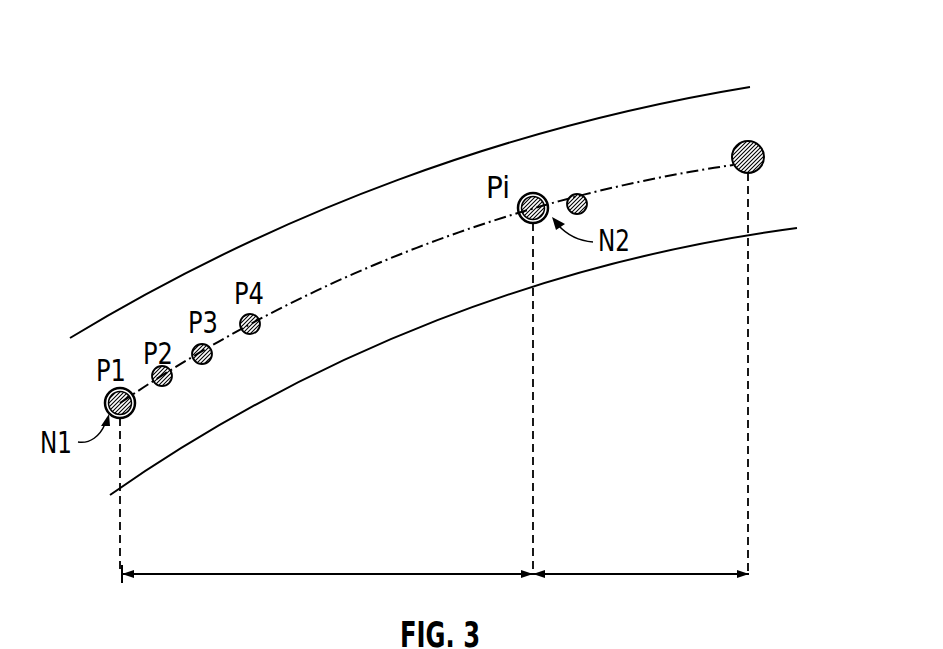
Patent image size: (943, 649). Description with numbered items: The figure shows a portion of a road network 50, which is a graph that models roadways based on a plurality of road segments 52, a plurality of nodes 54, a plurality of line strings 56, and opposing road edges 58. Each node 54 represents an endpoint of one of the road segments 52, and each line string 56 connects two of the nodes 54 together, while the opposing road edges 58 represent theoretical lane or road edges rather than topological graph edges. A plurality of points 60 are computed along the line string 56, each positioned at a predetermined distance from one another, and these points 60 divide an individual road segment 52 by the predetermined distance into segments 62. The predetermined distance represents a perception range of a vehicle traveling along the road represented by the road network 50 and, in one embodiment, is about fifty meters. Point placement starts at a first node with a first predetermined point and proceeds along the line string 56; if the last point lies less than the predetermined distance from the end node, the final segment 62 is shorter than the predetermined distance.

The road network 50 is at (724, 33).
The road segment 52 is at (328, 574).
The node 54 is at (109, 395).
The line string 56 is at (405, 258).
The opposing road edge 58 is at (367, 192).
The point 60 is at (122, 418).
The segment 62 is at (142, 387).